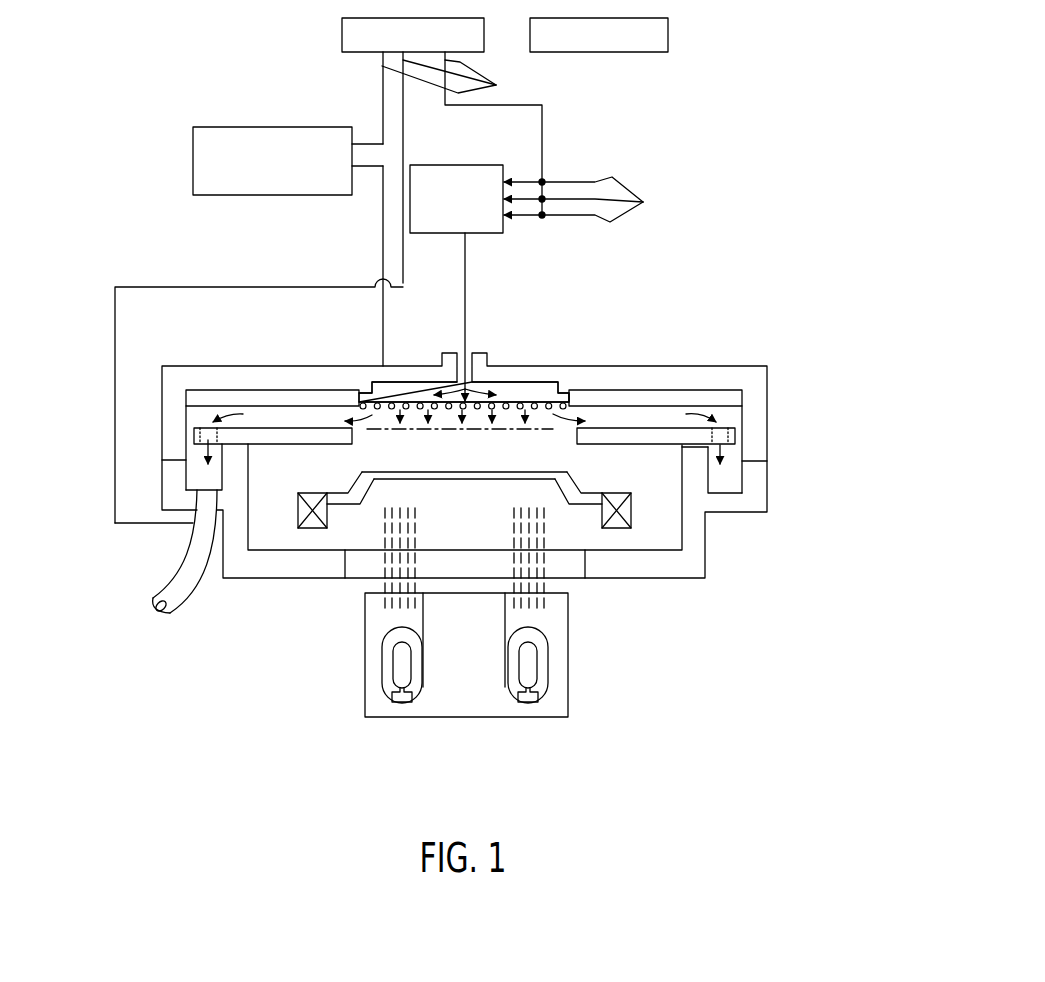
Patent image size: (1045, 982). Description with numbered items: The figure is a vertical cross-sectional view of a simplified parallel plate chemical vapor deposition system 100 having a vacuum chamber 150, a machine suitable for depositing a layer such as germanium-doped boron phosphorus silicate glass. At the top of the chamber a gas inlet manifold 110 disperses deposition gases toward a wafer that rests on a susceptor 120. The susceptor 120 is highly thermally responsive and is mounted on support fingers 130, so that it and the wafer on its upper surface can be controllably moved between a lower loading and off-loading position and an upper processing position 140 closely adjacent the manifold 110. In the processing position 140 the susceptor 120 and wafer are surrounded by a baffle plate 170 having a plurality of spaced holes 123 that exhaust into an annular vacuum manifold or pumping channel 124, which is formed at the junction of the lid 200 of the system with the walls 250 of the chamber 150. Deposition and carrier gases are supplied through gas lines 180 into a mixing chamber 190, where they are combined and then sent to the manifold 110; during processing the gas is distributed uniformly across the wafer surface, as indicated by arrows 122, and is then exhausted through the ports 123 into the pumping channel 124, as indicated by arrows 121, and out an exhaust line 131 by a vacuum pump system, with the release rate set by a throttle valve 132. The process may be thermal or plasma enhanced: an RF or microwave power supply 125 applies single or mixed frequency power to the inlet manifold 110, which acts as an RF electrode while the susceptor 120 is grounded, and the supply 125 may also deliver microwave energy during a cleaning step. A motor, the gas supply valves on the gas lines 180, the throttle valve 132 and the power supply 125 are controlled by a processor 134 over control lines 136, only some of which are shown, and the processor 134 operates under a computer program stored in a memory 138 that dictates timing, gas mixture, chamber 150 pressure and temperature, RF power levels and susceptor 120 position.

The chemical vapor deposition system 100 is at (441, 428).
The gas inlet manifold 110 is at (429, 369).
The susceptor 120 is at (464, 493).
The arrows 121 is at (485, 397).
The arrows 122 is at (442, 358).
The spaced holes 123 is at (208, 456).
The pumping channel 124 is at (202, 483).
The RF power supply 125 is at (288, 145).
The support fingers 130 is at (464, 517).
The exhaust line 131 is at (205, 558).
The throttle valve 132 is at (154, 545).
The processor 134 is at (378, 26).
The control lines 136 is at (462, 209).
The memory 138 is at (636, 31).
The processing position 140 is at (460, 447).
The vacuum chamber 150 is at (298, 478).
The baffle plate 170 is at (656, 455).
The gas lines 180 is at (595, 199).
The mixing chamber 190 is at (464, 260).
The lid 200 is at (162, 392).
The walls 250 is at (162, 498).